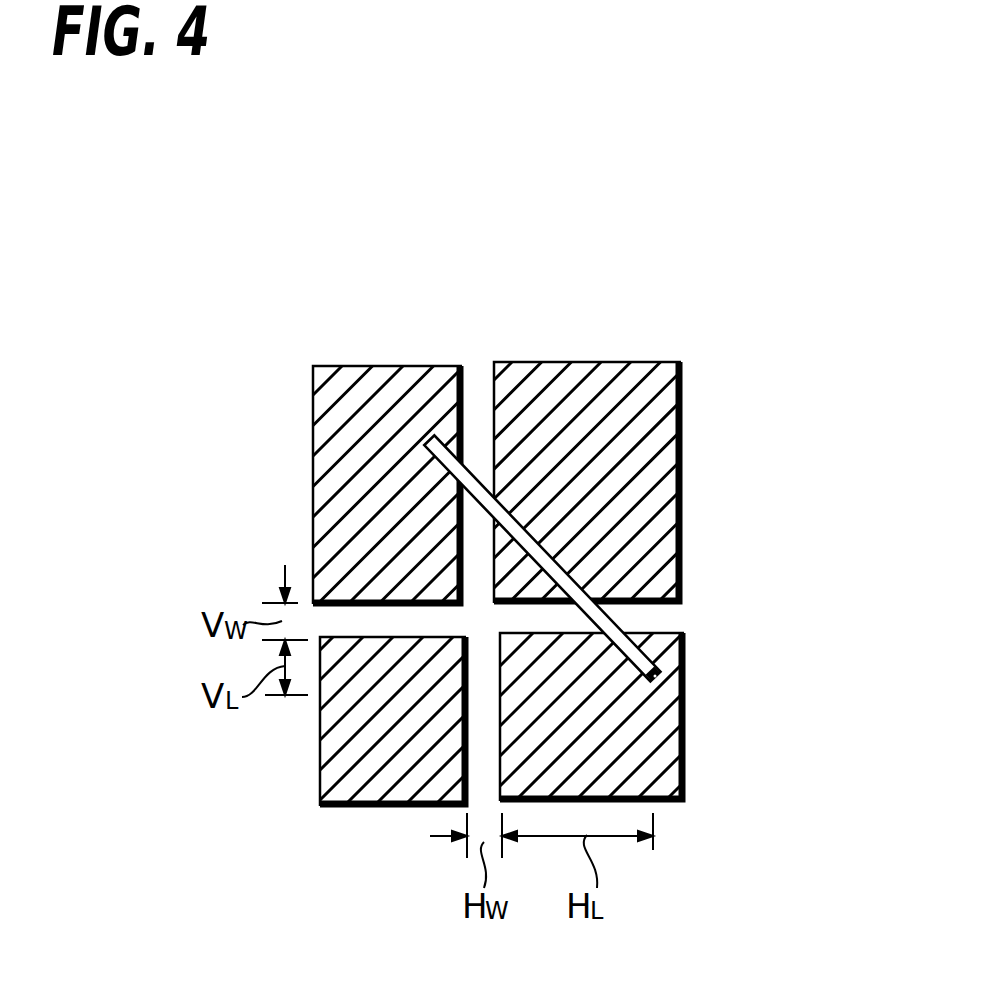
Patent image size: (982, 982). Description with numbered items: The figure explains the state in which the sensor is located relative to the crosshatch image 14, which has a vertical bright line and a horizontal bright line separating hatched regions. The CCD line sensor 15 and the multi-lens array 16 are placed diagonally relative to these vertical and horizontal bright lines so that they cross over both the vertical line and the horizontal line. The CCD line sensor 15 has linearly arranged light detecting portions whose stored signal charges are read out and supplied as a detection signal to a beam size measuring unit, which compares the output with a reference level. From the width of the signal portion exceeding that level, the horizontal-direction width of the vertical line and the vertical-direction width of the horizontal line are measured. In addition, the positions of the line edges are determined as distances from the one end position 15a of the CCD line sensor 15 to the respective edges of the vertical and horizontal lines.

The crosshatch image 14 is at (683, 447).
The CCD line sensor 15 is at (657, 558).
The multi-lens array 16 is at (605, 614).
The one end position of the CCD line sensor 15a is at (658, 678).